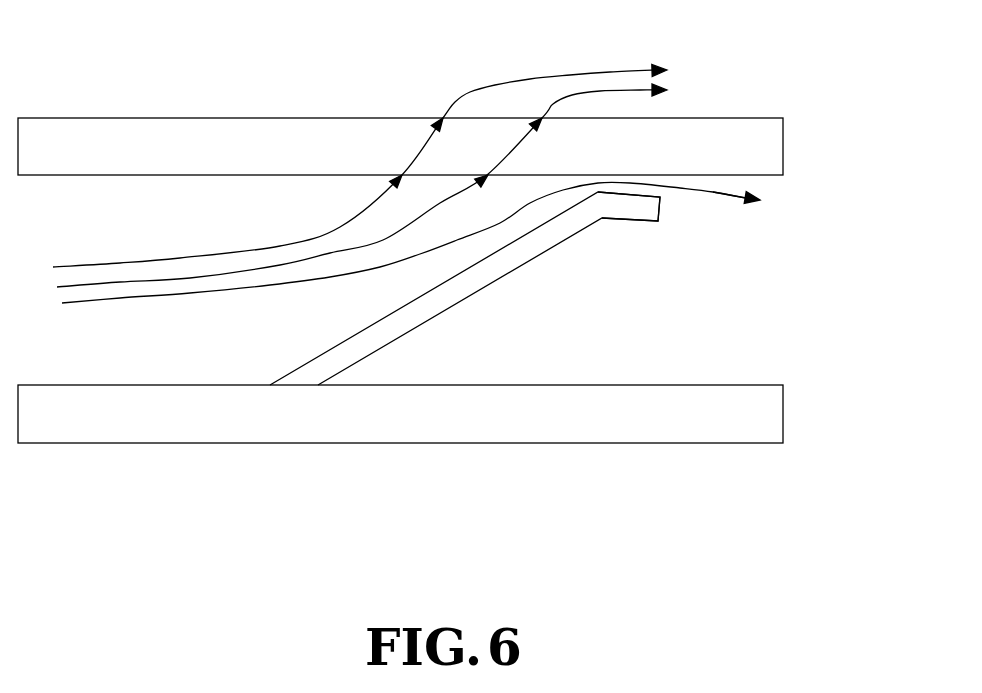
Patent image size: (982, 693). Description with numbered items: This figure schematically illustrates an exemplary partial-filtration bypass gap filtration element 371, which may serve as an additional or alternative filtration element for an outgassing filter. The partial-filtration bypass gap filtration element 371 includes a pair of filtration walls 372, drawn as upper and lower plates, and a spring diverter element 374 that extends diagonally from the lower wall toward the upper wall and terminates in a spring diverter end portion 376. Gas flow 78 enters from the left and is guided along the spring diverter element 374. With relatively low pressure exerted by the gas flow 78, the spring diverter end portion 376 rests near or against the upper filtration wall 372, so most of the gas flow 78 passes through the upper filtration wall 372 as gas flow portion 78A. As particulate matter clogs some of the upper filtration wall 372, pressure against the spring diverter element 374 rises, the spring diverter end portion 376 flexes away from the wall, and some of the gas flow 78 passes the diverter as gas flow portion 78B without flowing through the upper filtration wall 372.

The partial-filtration bypass gap filtration element 371 is at (147, 118).
The filtration wall 372 is at (230, 137).
The spring diverter element 374 is at (390, 327).
The spring diverter end portion 376 is at (633, 212).
The gas flow 78 is at (162, 295).
The gas flow portion 78A is at (582, 97).
The gas flow portion 78B is at (715, 192).